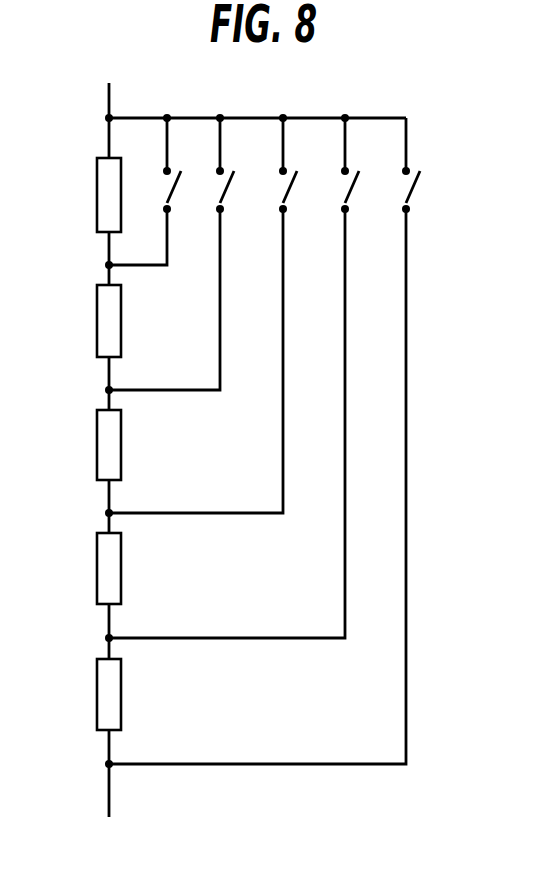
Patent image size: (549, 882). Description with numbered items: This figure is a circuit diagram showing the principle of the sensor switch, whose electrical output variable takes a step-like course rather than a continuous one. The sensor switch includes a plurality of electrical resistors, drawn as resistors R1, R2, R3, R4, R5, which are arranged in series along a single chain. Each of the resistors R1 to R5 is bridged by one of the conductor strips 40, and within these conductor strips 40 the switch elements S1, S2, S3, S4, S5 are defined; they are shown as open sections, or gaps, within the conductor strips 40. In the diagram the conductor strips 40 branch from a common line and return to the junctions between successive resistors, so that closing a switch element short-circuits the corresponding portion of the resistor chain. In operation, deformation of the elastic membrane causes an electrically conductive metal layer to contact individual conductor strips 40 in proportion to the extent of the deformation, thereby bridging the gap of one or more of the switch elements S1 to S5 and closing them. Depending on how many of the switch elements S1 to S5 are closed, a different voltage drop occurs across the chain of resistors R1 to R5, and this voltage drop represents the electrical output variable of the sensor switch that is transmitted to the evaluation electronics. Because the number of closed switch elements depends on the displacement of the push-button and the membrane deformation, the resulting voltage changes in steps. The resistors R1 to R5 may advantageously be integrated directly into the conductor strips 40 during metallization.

The conductor strips 40 is at (278, 439).
The resistor R1 is at (88, 195).
The resistor R2 is at (88, 321).
The resistor R3 is at (88, 445).
The resistor R4 is at (88, 568).
The resistor R5 is at (88, 694).
The switch element S1 is at (192, 247).
The switch element S2 is at (245, 334).
The switch element S3 is at (308, 419).
The switch element S4 is at (370, 502).
The switch element S5 is at (431, 585).